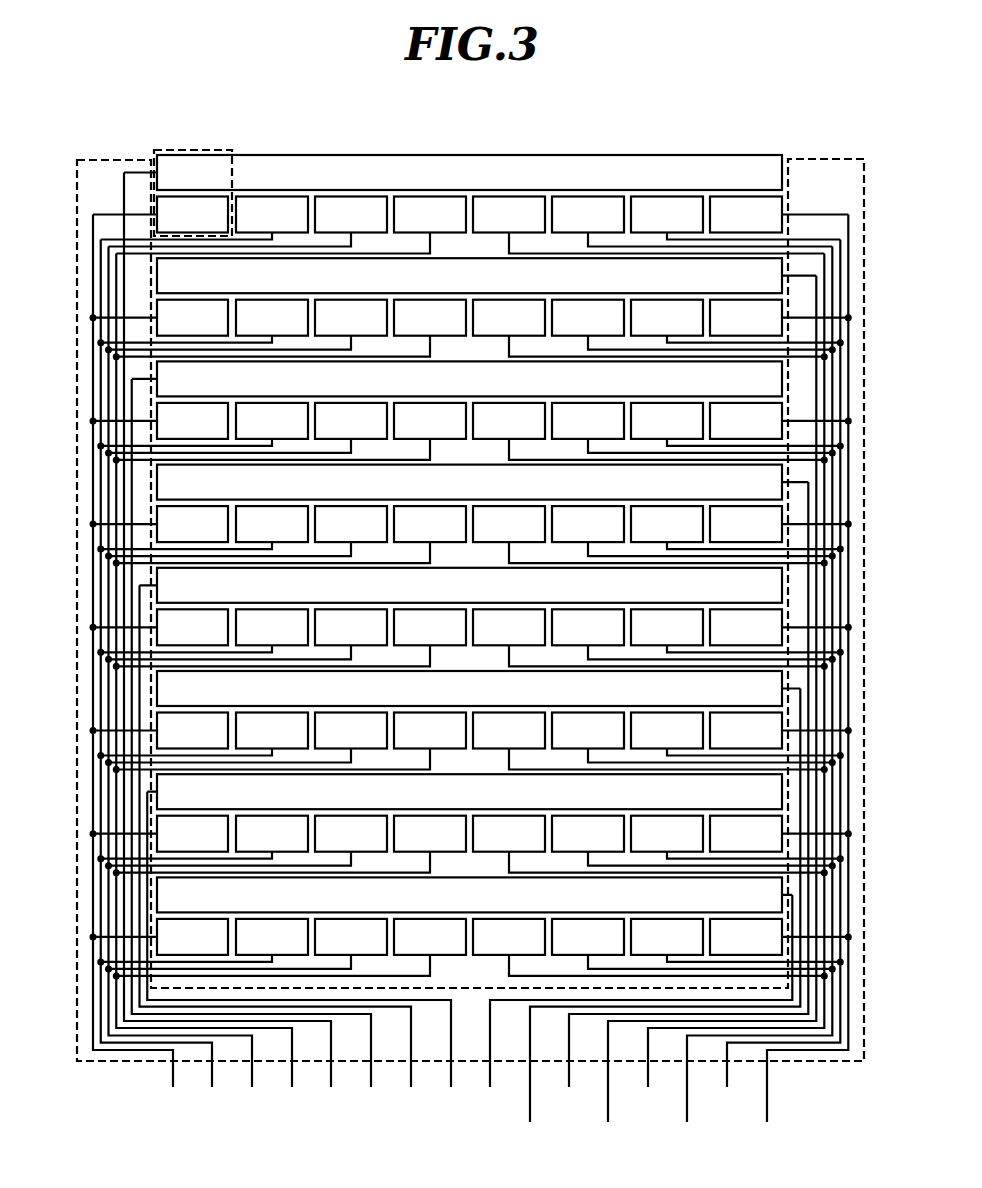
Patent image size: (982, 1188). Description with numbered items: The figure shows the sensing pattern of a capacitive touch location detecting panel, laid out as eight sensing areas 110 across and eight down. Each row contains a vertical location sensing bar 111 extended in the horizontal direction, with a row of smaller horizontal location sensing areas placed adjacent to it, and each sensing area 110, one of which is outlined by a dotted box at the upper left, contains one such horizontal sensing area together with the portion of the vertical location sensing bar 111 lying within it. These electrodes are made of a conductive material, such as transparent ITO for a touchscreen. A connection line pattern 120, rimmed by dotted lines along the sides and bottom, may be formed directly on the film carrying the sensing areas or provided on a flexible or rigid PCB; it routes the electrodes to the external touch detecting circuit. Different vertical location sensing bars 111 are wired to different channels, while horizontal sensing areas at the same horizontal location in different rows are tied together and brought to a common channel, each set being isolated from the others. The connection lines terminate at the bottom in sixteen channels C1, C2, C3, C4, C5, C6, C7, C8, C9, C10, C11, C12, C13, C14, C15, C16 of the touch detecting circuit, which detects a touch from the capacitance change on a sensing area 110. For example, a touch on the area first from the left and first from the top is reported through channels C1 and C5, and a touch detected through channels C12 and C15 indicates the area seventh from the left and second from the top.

The sensing area 110 is at (193, 149).
The vertical location sensing bar 111 is at (679, 153).
The connection line pattern 120 is at (827, 158).
The channel C1 is at (140, 666).
The channel C2 is at (163, 678).
The channel C3 is at (188, 682).
The channel C4 is at (211, 685).
The channel C5 is at (234, 645).
The channel C6 is at (258, 747).
The channel C7 is at (283, 850).
The channel C8 is at (306, 954).
The channel C9 is at (634, 1005).
The channel C10 is at (654, 919).
The channel C11 is at (678, 799).
The channel C12 is at (701, 712).
The channel C13 is at (725, 685).
The channel C14 is at (749, 698).
The channel C15 is at (773, 678).
The channel C16 is at (797, 682).